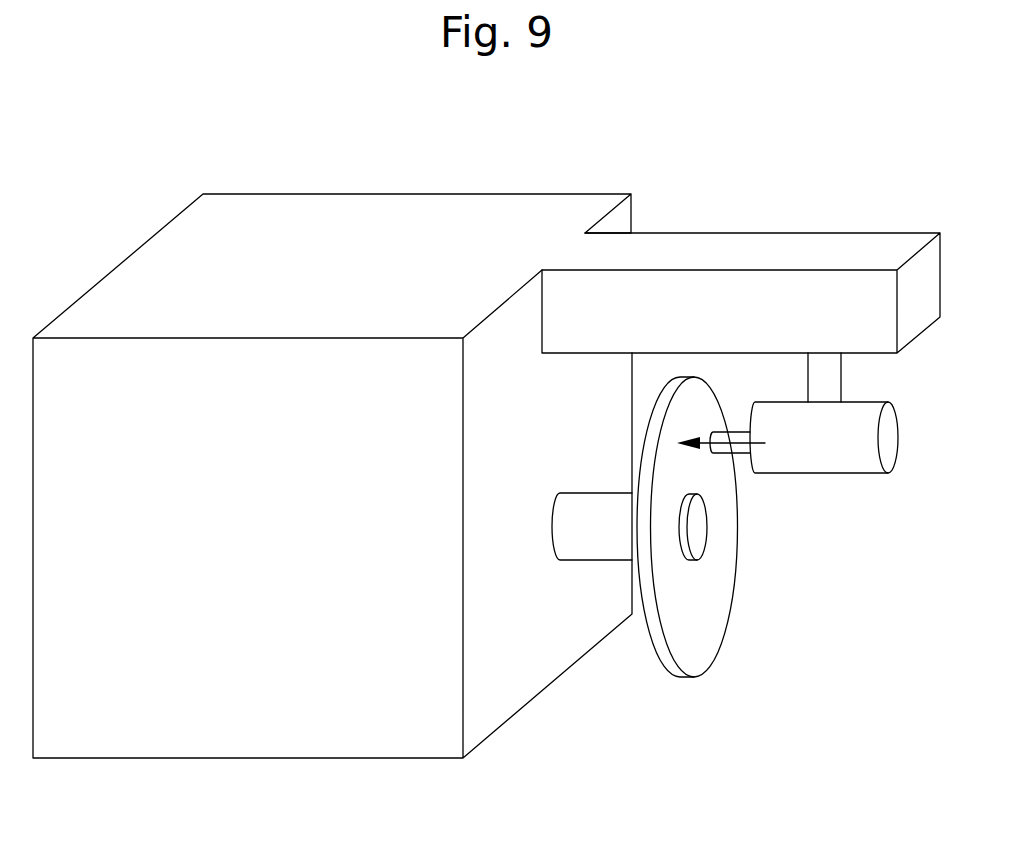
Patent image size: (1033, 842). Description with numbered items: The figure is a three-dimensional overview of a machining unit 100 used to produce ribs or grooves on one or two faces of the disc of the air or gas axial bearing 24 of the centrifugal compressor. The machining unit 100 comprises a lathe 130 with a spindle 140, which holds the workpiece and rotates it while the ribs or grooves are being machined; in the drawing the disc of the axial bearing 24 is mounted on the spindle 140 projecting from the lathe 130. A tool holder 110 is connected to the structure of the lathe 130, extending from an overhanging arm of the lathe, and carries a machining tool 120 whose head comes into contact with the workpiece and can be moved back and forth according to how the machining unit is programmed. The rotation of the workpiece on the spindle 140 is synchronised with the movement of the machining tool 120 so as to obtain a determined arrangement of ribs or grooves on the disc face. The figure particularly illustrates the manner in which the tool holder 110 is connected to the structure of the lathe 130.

The machining unit 100 is at (203, 175).
The lathe 130 is at (349, 213).
The spindle 140 is at (583, 543).
The air or gas axial bearing 24 is at (717, 583).
The machining tool 120 is at (733, 448).
The tool holder 110 is at (862, 460).